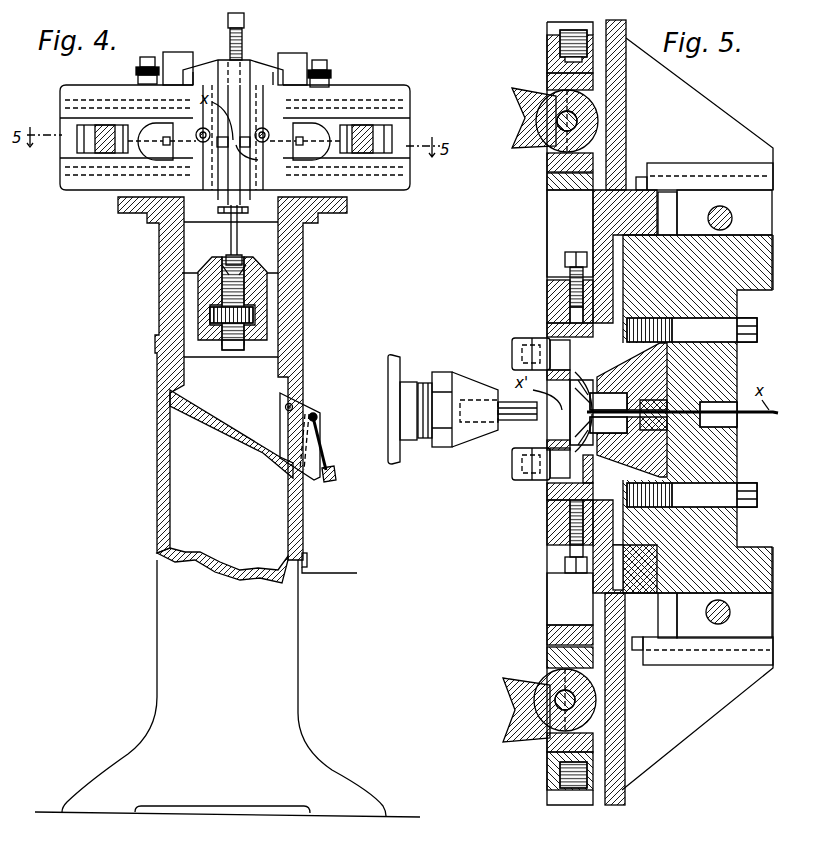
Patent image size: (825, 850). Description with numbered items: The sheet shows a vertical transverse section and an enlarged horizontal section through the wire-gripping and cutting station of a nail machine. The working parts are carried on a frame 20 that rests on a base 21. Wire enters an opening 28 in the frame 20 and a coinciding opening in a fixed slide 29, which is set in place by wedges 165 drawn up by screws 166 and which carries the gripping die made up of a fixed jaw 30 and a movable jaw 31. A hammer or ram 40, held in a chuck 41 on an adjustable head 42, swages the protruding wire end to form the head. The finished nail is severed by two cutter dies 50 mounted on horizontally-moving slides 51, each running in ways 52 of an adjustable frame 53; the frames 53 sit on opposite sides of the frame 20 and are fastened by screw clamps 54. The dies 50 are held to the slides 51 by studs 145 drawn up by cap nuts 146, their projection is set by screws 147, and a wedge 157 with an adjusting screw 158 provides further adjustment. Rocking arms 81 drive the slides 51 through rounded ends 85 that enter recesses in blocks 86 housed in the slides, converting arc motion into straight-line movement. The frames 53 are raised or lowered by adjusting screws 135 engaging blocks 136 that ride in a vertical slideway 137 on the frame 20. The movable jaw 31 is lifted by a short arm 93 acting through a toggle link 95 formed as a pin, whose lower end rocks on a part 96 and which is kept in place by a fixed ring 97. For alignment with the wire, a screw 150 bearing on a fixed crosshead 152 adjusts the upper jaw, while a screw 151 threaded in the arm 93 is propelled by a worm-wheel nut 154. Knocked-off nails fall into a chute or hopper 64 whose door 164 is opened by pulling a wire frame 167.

In FIG. 4, the frame 20 is at (159, 271).
In FIG. 5, the frame 20 is at (752, 291).
In FIG. 4, the base 21 is at (157, 637).
In FIG. 5, the opening 28 is at (733, 421).
In FIG. 5, the fixed slide 29 is at (632, 410).
In FIG. 4, the jaw 30 is at (236, 105).
In FIG. 4, the jaw 31 is at (231, 172).
In FIG. 5, the jaw 31 is at (606, 395).
In FIG. 5, the hammer or ram 40 is at (510, 420).
In FIG. 5, the chuck 41 is at (468, 378).
In FIG. 5, the adjustable head 42 is at (425, 440).
In FIG. 4, the cutter dies 50 is at (220, 148).
In FIG. 5, the cutter dies 50 is at (578, 405).
In FIG. 4, the slides 51 is at (185, 155).
In FIG. 5, the slides 51 is at (547, 331).
In FIG. 4, the ways 52 is at (62, 117).
In FIG. 5, the ways 52 is at (553, 25).
In FIG. 4, the adjustable frame 53 is at (83, 190).
In FIG. 5, the adjustable frame 53 is at (626, 138).
In FIG. 5, the screw clamp 54 is at (697, 165).
In FIG. 4, the chute or hopper 64 is at (225, 486).
In FIG. 4, the rocking arms 81 is at (105, 125).
In FIG. 5, the rocking arms 81 is at (512, 113).
In FIG. 5, the rounded ends 85 is at (548, 148).
In FIG. 5, the blocks 86 is at (547, 747).
In FIG. 4, the short arm 93 is at (198, 290).
In FIG. 4, the toggle link 95 is at (231, 237).
In FIG. 4, the part 96 is at (241, 259).
In FIG. 4, the fixed ring 97 is at (248, 210).
In FIG. 4, the adjusting screws 135 is at (147, 57).
In FIG. 5, the adjusting screws 135 is at (735, 212).
In FIG. 5, the blocks 136 is at (665, 190).
In FIG. 5, the vertical slideway 137 is at (700, 235).
In FIG. 5, the studs 145 is at (590, 470).
In FIG. 4, the cap nuts 146 is at (265, 130).
In FIG. 5, the cap nuts 146 is at (512, 470).
In FIG. 4, the screws 147 is at (234, 141).
In FIG. 5, the screws 147 is at (572, 252).
In FIG. 4, the screw 150 is at (243, 45).
In FIG. 4, the screw 151 is at (229, 350).
In FIG. 4, the fixed crosshead 152 is at (207, 70).
In FIG. 4, the nut 154 is at (253, 316).
In FIG. 5, the wedge 157 is at (597, 432).
In FIG. 5, the adjusting screw 158 is at (667, 443).
In FIG. 4, the door 164 is at (297, 470).
In FIG. 5, the wedges 165 is at (645, 318).
In FIG. 5, the screws 166 is at (753, 343).
In FIG. 4, the wire frame 167 is at (330, 565).